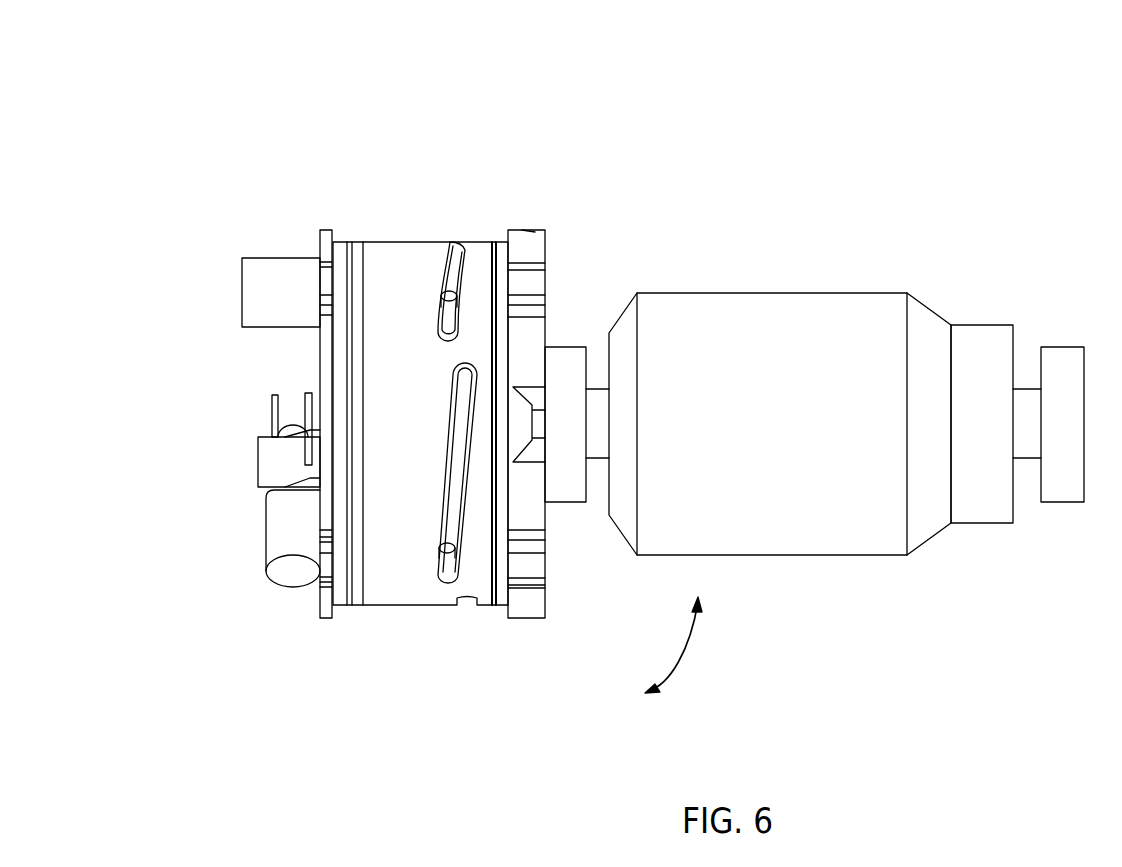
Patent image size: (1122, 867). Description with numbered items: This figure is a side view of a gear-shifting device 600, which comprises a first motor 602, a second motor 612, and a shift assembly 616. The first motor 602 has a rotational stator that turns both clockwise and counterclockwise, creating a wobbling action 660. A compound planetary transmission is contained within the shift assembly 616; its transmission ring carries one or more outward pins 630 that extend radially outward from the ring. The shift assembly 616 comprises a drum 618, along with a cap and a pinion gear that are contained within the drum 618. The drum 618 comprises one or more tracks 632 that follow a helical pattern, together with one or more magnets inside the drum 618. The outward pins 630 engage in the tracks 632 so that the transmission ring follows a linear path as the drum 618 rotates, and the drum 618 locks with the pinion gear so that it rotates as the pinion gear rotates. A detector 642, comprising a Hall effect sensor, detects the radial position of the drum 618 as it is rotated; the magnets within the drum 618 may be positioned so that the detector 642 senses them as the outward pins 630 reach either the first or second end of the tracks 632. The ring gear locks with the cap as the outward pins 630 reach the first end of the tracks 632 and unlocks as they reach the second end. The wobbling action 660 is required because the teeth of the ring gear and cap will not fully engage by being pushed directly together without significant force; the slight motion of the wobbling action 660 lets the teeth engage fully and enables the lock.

The gear-shifting device 600 is at (170, 63).
The first motor 602 is at (763, 323).
The second motor 612 is at (280, 547).
The shift assembly 616 is at (550, 622).
The drum 618 is at (397, 258).
The outward pins 630 is at (497, 603).
The tracks 632 is at (460, 272).
The detector 642 is at (307, 312).
The wobbling action 660 is at (695, 658).